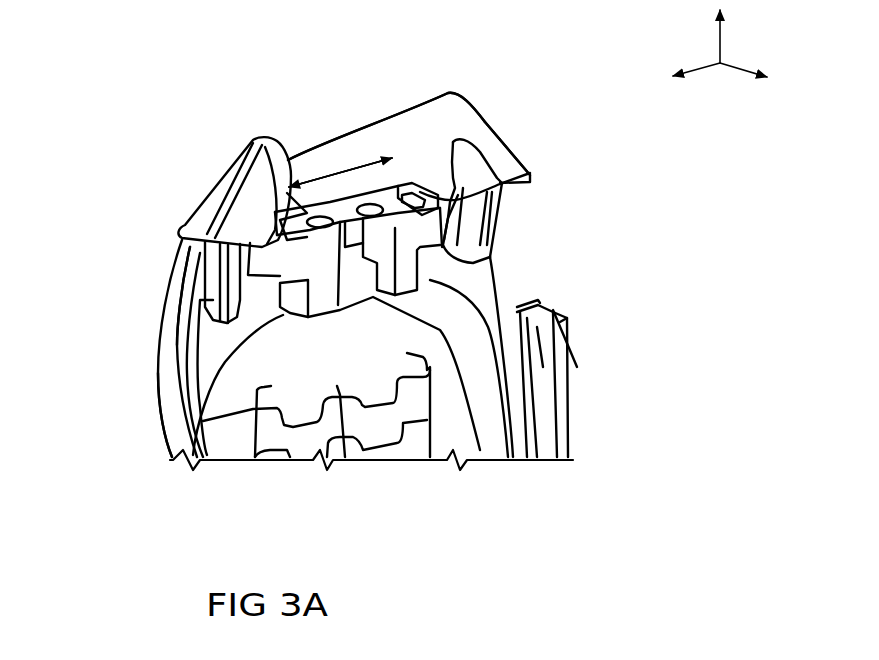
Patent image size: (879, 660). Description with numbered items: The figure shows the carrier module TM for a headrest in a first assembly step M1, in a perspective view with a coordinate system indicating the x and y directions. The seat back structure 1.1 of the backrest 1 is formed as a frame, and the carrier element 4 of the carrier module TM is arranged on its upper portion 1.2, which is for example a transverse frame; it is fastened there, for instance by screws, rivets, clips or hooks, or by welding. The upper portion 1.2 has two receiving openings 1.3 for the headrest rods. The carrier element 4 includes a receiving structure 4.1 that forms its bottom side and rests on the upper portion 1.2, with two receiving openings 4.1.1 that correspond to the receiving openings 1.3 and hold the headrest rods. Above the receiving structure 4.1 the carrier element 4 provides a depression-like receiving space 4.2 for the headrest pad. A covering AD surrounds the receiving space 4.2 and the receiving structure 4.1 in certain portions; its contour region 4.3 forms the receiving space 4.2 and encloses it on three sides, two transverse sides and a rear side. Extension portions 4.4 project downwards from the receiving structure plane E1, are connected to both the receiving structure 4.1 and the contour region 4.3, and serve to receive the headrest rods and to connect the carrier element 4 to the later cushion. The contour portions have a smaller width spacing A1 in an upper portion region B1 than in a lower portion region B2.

The first assembly step M1 is at (100, 42).
The backrest 1 is at (148, 410).
The seat back structure 1.1 is at (173, 348).
The upper portion 1.2 is at (190, 262).
The receiving openings 1.3 is at (259, 139).
The carrier element 4 is at (500, 132).
The receiving structure 4.1 is at (490, 257).
The receiving openings 4.1.1 is at (502, 188).
The receiving space 4.2 is at (438, 114).
The contour region 4.3 is at (337, 155).
The extension portions 4.4 is at (497, 207).
The covering AD is at (337, 155).
The spacing A1 is at (357, 163).
The upper portion region B1 is at (237, 149).
The lower portion region B2 is at (207, 228).
The receiving structure plane E1 is at (403, 183).
The carrier module TM is at (510, 94).
The x axis x is at (757, 54).
The y axis y is at (685, 79).